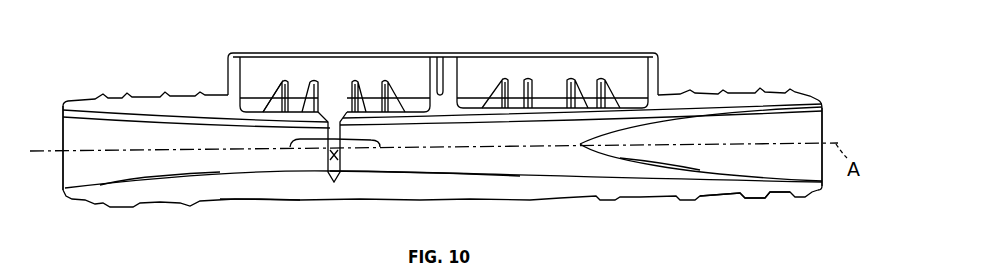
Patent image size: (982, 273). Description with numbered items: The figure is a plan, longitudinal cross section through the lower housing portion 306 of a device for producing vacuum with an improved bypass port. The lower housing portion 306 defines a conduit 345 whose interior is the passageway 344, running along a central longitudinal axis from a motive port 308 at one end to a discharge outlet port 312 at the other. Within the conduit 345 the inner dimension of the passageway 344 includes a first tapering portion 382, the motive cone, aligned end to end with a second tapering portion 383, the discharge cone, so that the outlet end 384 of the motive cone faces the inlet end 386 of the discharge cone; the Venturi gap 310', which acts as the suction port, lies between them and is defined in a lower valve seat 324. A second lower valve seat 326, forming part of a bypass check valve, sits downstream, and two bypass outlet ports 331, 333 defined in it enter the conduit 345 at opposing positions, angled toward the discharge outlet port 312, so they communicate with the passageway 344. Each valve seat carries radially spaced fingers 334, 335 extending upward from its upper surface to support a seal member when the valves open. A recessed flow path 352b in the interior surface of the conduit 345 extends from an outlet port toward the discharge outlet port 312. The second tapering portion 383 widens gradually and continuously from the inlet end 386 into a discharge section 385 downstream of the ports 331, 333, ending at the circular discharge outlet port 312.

The lower housing portion 306 is at (399, 47).
The motive port 308 is at (72, 198).
The Venturi gap 310' is at (330, 175).
The discharge outlet port 312 is at (813, 193).
The lower valve seat 324 is at (229, 81).
The lower valve seat 326 is at (657, 78).
The bypass outlet port 331 is at (587, 146).
The bypass outlet port 333 is at (568, 113).
The radially spaced fingers 334 is at (313, 82).
The radially spaced fingers 335 is at (530, 82).
The passageway 344 is at (165, 164).
The conduit 345 is at (252, 185).
The recessed flow path 352b is at (633, 158).
The first tapering portion 382 is at (127, 173).
The second tapering portion 383 is at (444, 167).
The outlet end 384 is at (301, 156).
The discharge section 385 is at (728, 175).
The inlet end 386 is at (367, 157).